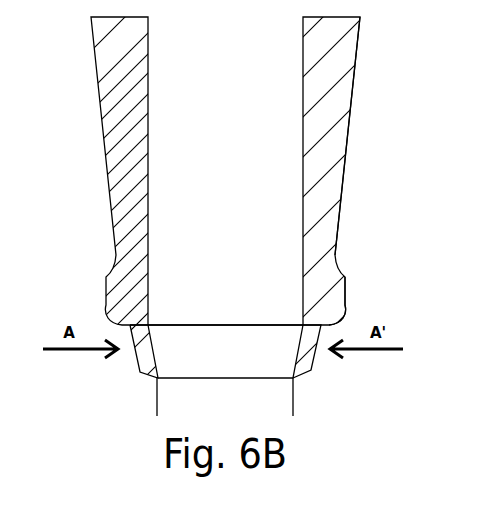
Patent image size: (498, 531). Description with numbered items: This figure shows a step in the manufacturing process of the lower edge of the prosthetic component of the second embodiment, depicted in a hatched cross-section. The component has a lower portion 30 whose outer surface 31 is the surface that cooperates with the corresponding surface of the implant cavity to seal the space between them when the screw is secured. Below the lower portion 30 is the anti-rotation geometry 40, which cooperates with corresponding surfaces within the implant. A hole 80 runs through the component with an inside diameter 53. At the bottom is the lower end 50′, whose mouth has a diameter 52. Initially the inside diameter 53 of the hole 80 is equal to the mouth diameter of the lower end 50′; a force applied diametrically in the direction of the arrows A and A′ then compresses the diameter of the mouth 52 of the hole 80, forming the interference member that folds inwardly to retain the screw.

The lower portion 30 is at (330, 132).
The surface of the lower portion 31 is at (345, 172).
The anti-rotation geometry 40 is at (333, 297).
The hole 80 is at (225, 210).
The lower end 50′ is at (310, 358).
The inside diameter of the hole 53 is at (303, 217).
The diameter of the mouth 52 is at (157, 407).